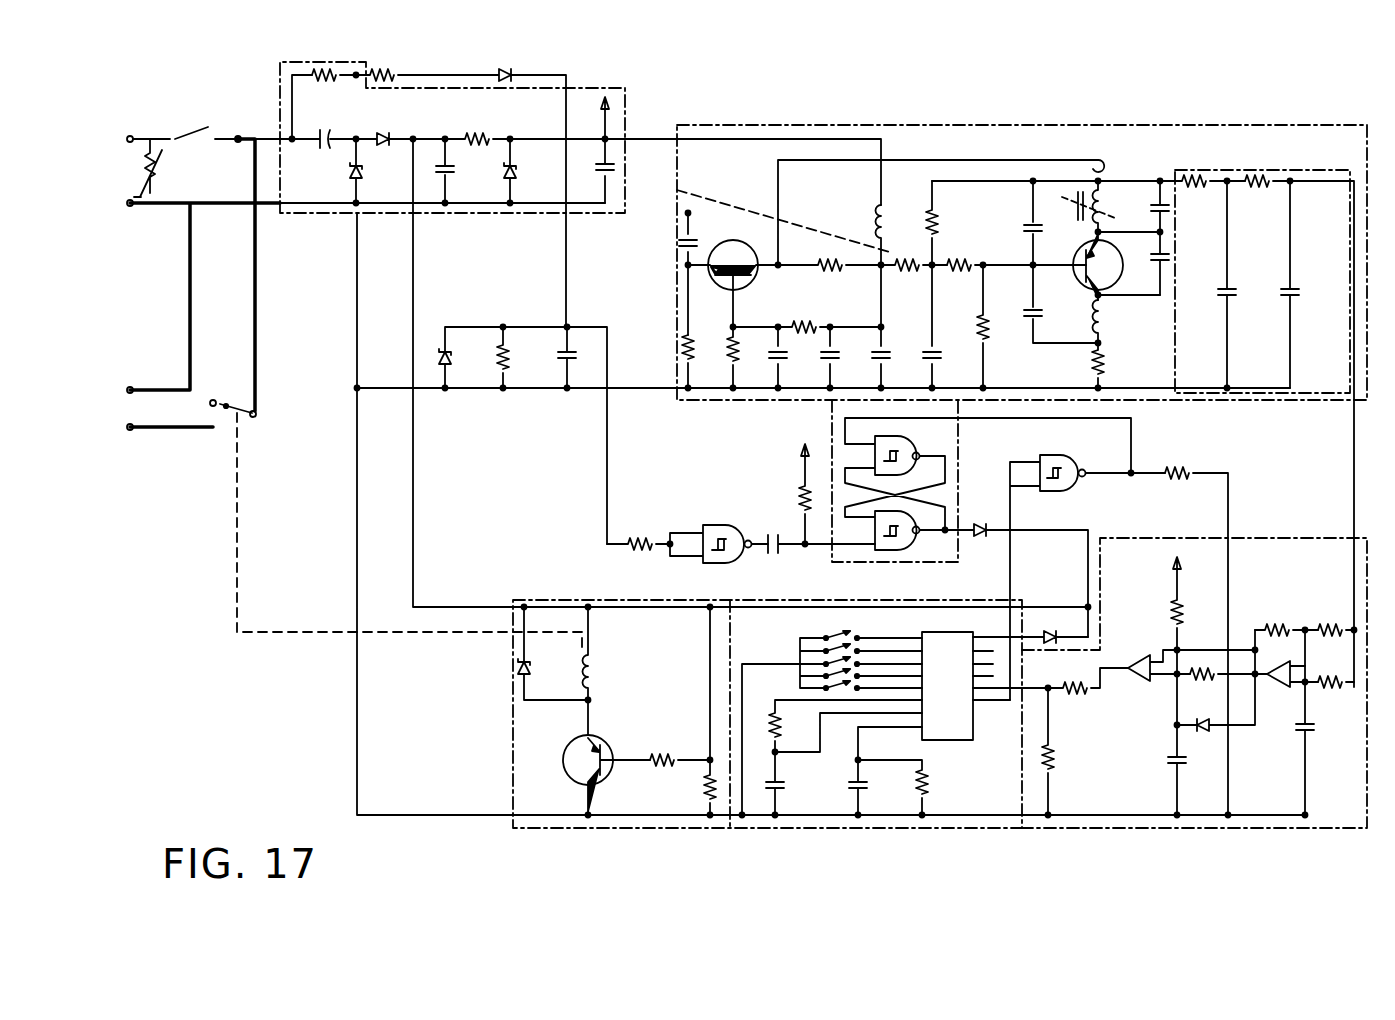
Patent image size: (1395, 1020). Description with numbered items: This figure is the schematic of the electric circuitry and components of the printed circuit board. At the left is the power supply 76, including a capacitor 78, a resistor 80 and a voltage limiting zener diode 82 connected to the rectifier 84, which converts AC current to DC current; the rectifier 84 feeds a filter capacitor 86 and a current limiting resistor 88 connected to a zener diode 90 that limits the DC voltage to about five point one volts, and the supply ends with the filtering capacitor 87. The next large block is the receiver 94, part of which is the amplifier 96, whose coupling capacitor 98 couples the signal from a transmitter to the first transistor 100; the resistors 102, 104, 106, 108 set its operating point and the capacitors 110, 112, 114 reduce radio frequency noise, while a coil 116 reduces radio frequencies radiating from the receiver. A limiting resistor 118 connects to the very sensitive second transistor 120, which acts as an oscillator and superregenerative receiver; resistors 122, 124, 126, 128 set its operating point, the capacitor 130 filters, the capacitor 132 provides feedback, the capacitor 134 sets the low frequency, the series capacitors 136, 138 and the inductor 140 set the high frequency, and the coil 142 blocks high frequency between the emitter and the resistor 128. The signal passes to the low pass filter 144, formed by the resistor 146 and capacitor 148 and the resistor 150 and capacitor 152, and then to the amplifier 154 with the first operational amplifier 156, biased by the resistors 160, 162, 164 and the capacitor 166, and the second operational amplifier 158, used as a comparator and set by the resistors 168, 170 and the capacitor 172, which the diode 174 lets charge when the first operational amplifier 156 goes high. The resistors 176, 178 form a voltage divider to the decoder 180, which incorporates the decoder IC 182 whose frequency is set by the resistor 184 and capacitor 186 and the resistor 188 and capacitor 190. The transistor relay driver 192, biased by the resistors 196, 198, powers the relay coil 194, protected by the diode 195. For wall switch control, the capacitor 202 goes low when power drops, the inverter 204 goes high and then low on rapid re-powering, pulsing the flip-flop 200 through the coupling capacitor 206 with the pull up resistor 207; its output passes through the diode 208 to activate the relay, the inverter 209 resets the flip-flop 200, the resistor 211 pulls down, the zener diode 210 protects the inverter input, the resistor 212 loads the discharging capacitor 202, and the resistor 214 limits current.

The power supply 76 is at (280, 78).
The capacitor 78 is at (327, 152).
The resistor 80 is at (320, 62).
The voltage limiting zener diode 82 is at (353, 168).
The rectifier 84 is at (385, 130).
The filter capacitor 86 is at (458, 172).
The filtering capacitor 87 is at (627, 175).
The current limiting resistor 88 is at (478, 125).
The zener diode 90 is at (523, 172).
The receiver 94 is at (740, 122).
The amplifier 96 is at (700, 192).
The coupling capacitor 98 is at (683, 246).
The first transistor 100 is at (735, 247).
The resistor 102 is at (680, 357).
The resistor 104 is at (723, 363).
The resistor 106 is at (840, 257).
The resistor 108 is at (800, 318).
The capacitor 110 is at (760, 355).
The capacitor 112 is at (818, 360).
The capacitor 114 is at (895, 352).
The coil 116 is at (867, 213).
The limiting resistor 118 is at (907, 255).
The second transistor 120 is at (1105, 252).
The resistor 122 is at (933, 210).
The resistor 124 is at (960, 258).
The resistor 126 is at (993, 325).
The resistor 128 is at (1110, 368).
The capacitor 130 is at (945, 358).
The capacitor 132 is at (1020, 230).
The capacitor 134 is at (1045, 322).
The capacitor 136 is at (1173, 207).
The capacitor 138 is at (1172, 262).
The inductor 140 is at (1110, 200).
The coil 142 is at (1103, 318).
The low pass filter 144 is at (1247, 170).
The resistor 146 is at (1193, 172).
The capacitor 148 is at (1240, 296).
The resistor 150 is at (1262, 172).
The capacitor 152 is at (1303, 297).
The amplifier 154 is at (1270, 537).
The first operational amplifier 156 is at (1283, 660).
The second operational amplifier 158 is at (1135, 662).
The resistor 160 is at (1332, 623).
The resistor 162 is at (1278, 623).
The resistor 164 is at (1337, 693).
The capacitor 166 is at (1300, 733).
The resistor 168 is at (1197, 688).
The resistor 170 is at (1187, 610).
The capacitor 172 is at (1188, 770).
The diode 174 is at (1193, 730).
The resistor 176 is at (1075, 698).
The resistor 178 is at (1058, 772).
The decoder 180 is at (837, 830).
The decoder IC 182 is at (960, 733).
The resistor 184 is at (765, 727).
The capacitor 186 is at (790, 792).
The resistor 188 is at (932, 792).
The capacitor 190 is at (870, 795).
The transistor relay driver 192 is at (608, 788).
The relay coil 194 is at (592, 670).
The diode 195 is at (515, 666).
The resistor 196 is at (702, 792).
The resistor 198 is at (662, 750).
The flip-flop 200 is at (960, 445).
The capacitor 202 is at (555, 360).
The inverter 204 is at (717, 525).
The coupling capacitor 206 is at (787, 557).
The resistor 207 is at (797, 505).
The diode 208 is at (983, 540).
The inverter 209 is at (1058, 487).
The voltage limiting zener diode 210 is at (460, 362).
The resistor 211 is at (1183, 470).
The resistor 212 is at (512, 352).
The resistor 214 is at (640, 556).